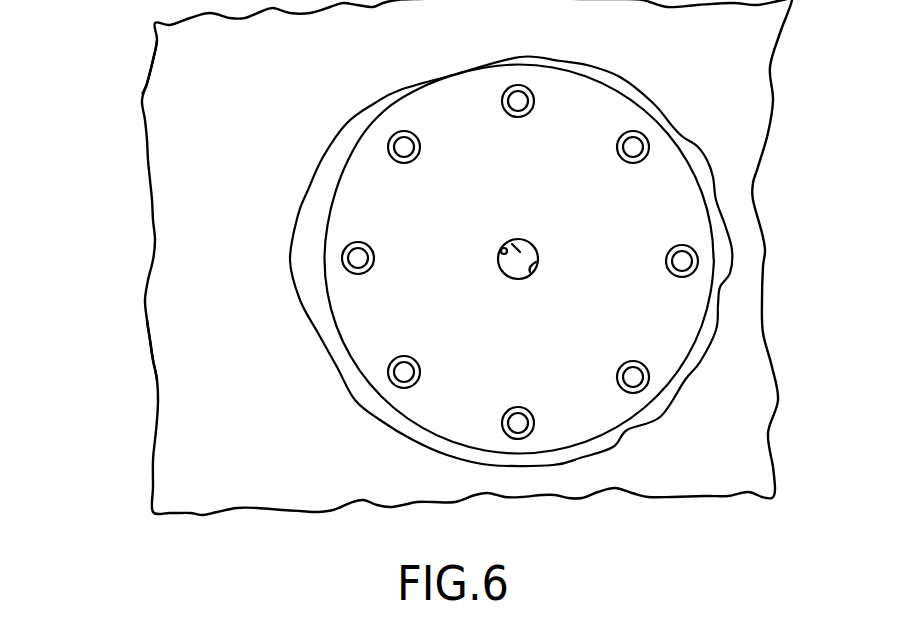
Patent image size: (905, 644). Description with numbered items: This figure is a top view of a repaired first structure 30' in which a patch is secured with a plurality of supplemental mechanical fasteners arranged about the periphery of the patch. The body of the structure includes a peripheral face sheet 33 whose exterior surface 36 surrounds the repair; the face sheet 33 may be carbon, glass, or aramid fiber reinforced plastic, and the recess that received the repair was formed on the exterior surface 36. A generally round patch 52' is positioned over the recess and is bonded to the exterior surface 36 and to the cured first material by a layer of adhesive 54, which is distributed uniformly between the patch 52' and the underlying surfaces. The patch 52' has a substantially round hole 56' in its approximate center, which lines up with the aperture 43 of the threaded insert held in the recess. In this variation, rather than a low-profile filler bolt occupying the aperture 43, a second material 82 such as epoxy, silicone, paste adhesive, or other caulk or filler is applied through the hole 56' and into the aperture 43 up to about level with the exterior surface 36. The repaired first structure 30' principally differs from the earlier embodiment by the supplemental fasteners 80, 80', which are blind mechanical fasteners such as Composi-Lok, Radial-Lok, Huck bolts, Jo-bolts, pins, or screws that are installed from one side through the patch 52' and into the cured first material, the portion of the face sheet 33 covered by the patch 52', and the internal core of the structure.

The repaired first structure 30' is at (415, 257).
The peripheral face sheet 33 is at (186, 80).
The exterior surface 36 is at (190, 362).
The patch 52' is at (520, 259).
The layer of adhesive 54 is at (357, 385).
The hole 56' is at (552, 268).
The supplemental fastener 80 is at (658, 276).
The supplemental fastener 80' is at (436, 156).
The aperture 43 is at (506, 250).
The second material 82 is at (518, 248).